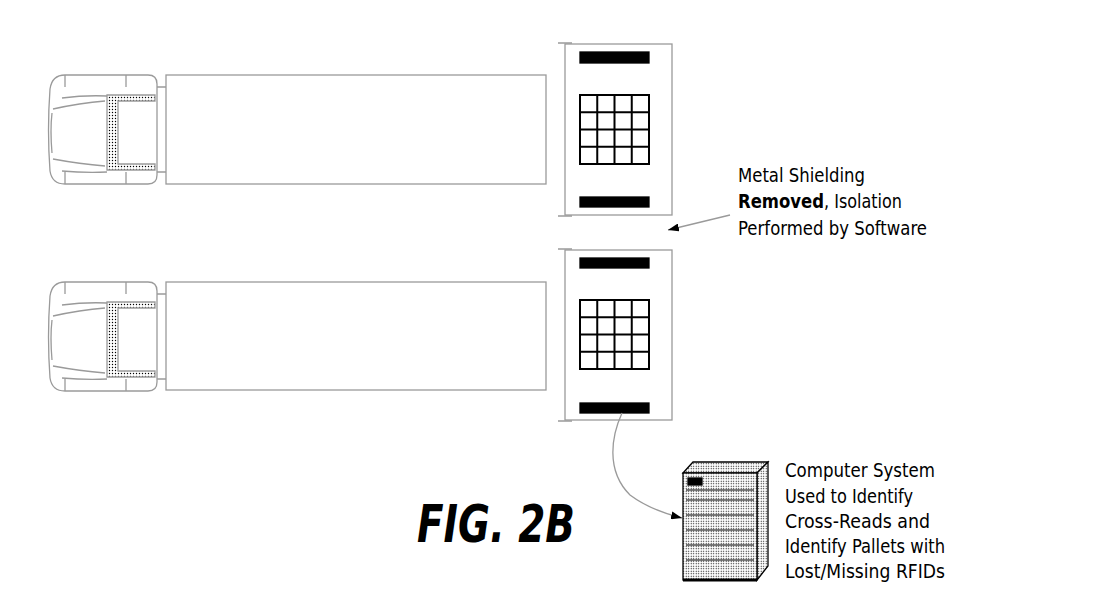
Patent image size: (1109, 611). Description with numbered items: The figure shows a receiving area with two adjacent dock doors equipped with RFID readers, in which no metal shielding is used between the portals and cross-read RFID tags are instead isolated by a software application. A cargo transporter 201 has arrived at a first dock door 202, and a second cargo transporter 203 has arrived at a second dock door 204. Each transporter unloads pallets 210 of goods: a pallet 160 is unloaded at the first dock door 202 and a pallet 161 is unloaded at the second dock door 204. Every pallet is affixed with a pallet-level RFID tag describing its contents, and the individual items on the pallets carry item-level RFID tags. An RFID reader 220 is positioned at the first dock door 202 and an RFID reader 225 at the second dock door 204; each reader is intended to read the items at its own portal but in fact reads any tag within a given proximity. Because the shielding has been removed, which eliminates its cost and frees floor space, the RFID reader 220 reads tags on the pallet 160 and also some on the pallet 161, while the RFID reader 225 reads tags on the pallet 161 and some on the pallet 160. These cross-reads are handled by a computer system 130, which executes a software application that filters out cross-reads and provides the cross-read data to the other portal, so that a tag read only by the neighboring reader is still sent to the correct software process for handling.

The computer system 130 is at (683, 557).
The pallet 160 is at (575, 90).
The pallet 161 is at (552, 376).
The cargo transporter 201 is at (298, 129).
The dock door 202 is at (557, 128).
The cargo transporter 203 is at (298, 336).
The dock door 204 is at (558, 335).
The pallets 210 is at (510, 231).
The RFID reader 220 is at (660, 195).
The RFID reader 225 is at (660, 268).